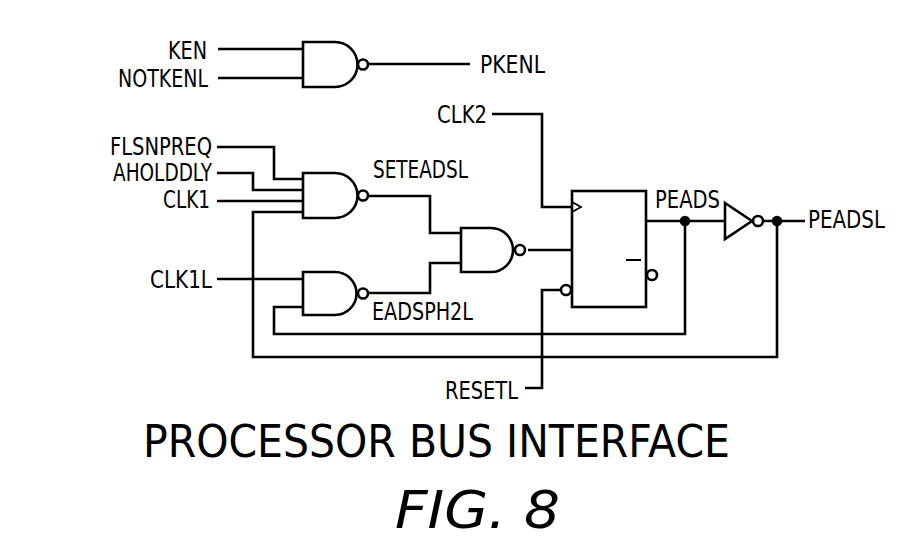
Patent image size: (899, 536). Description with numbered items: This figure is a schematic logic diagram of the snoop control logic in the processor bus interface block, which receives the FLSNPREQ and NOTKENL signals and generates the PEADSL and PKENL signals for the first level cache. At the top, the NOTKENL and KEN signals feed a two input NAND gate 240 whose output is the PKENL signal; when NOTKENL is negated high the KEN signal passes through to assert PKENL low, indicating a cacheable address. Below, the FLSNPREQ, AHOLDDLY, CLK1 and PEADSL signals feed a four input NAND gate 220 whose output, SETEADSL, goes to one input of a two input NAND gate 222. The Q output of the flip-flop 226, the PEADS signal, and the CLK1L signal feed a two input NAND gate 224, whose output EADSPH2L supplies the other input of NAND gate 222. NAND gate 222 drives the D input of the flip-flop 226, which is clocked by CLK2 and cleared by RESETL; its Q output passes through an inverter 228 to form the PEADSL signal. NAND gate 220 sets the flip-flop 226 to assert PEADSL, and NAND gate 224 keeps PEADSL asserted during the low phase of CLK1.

The two input NAND gate 240 is at (343, 43).
The four input NAND gate 220 is at (330, 173).
The two input NAND gate 222 is at (505, 201).
The two input NAND gate 224 is at (343, 272).
The flip-flop 226 is at (618, 191).
The inverter 228 is at (735, 212).